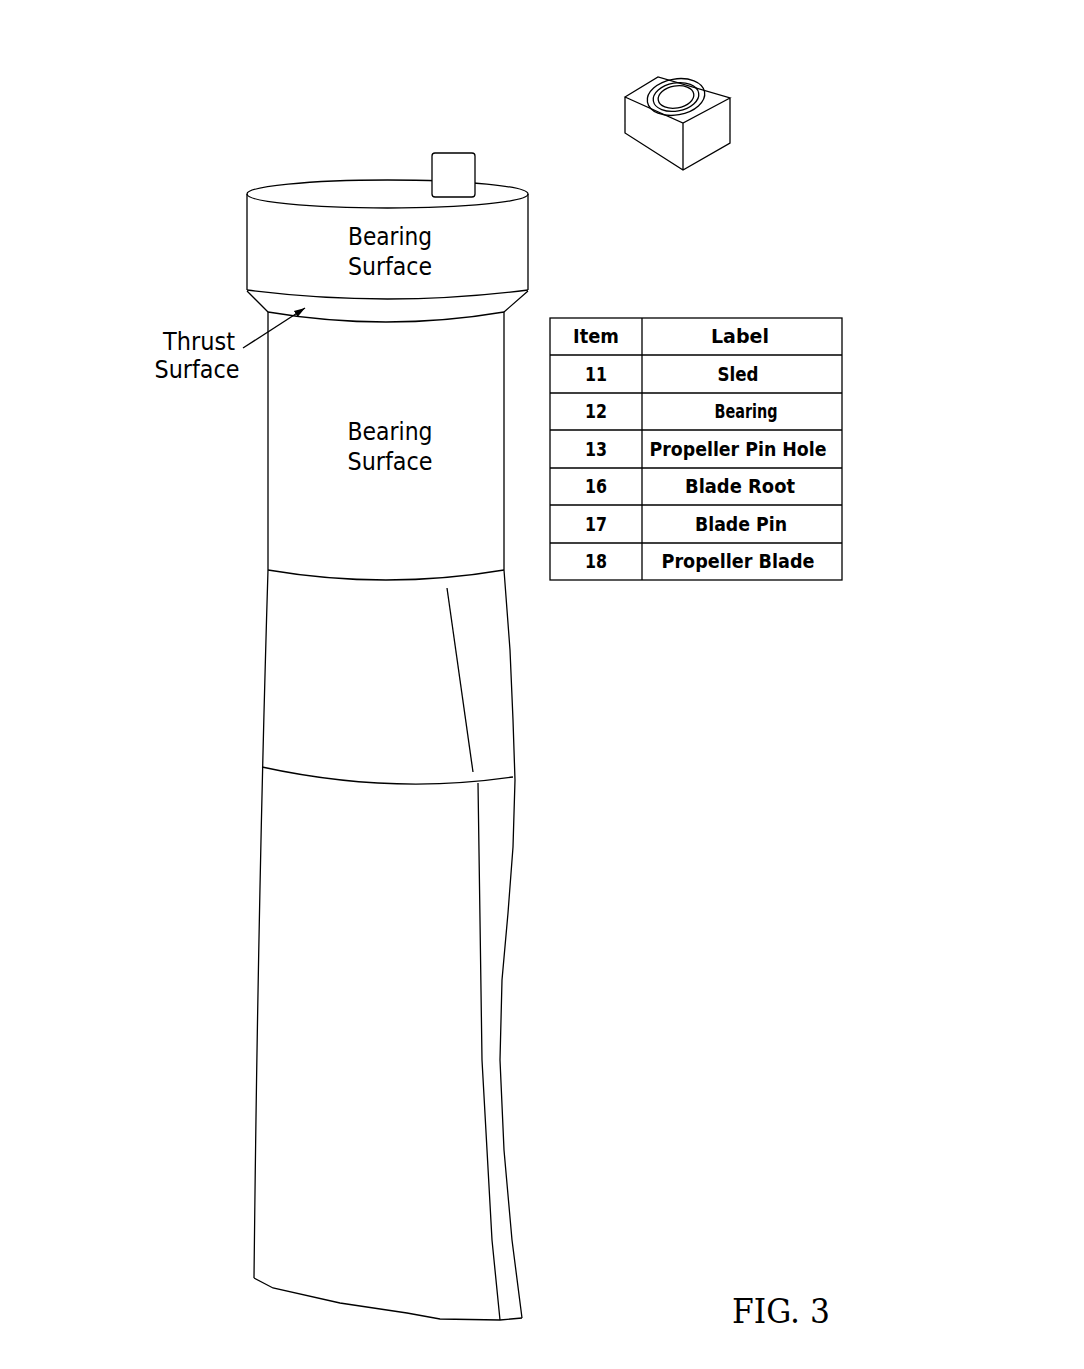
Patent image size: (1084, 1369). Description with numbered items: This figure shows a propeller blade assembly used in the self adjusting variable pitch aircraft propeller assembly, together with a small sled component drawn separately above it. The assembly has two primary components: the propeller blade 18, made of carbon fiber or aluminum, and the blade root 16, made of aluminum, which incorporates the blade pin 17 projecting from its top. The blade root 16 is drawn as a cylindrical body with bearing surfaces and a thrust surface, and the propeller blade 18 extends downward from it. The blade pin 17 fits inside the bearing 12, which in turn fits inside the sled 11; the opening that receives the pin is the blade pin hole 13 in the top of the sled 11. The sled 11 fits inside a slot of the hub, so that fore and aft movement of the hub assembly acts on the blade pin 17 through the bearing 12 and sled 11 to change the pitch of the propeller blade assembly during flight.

The sled 11 is at (735, 123).
The bearing 12 is at (707, 92).
The blade pin hole 13 is at (686, 81).
The blade root 16 is at (532, 253).
The blade pin 17 is at (465, 151).
The propeller blade 18 is at (512, 725).